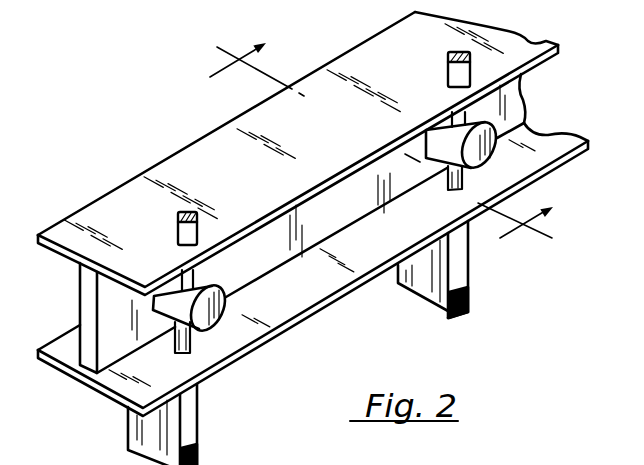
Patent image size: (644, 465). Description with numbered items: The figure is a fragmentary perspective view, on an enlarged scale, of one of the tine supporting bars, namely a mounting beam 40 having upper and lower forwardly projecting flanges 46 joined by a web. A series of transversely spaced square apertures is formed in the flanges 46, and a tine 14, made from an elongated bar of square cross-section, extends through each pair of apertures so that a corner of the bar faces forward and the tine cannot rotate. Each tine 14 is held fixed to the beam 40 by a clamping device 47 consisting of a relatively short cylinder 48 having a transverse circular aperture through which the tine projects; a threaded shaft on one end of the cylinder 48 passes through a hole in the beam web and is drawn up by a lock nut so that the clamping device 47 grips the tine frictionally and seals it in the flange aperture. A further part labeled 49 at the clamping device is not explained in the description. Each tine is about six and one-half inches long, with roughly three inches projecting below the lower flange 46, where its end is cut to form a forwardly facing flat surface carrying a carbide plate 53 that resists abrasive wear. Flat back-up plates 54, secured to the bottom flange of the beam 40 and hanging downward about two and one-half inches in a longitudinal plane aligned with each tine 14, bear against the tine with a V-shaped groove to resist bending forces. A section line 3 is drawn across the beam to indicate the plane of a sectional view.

The section line 3- 3 is at (377, 149).
The tine 14 is at (180, 221).
The mounting beam 40 is at (336, 238).
The flange 46 is at (558, 44).
The clamping device 47 is at (165, 323).
The cylinder 48 is at (229, 309).
The pin 49 is at (205, 283).
The carbide plate 53 is at (198, 459).
The back-up plate 54 is at (150, 433).